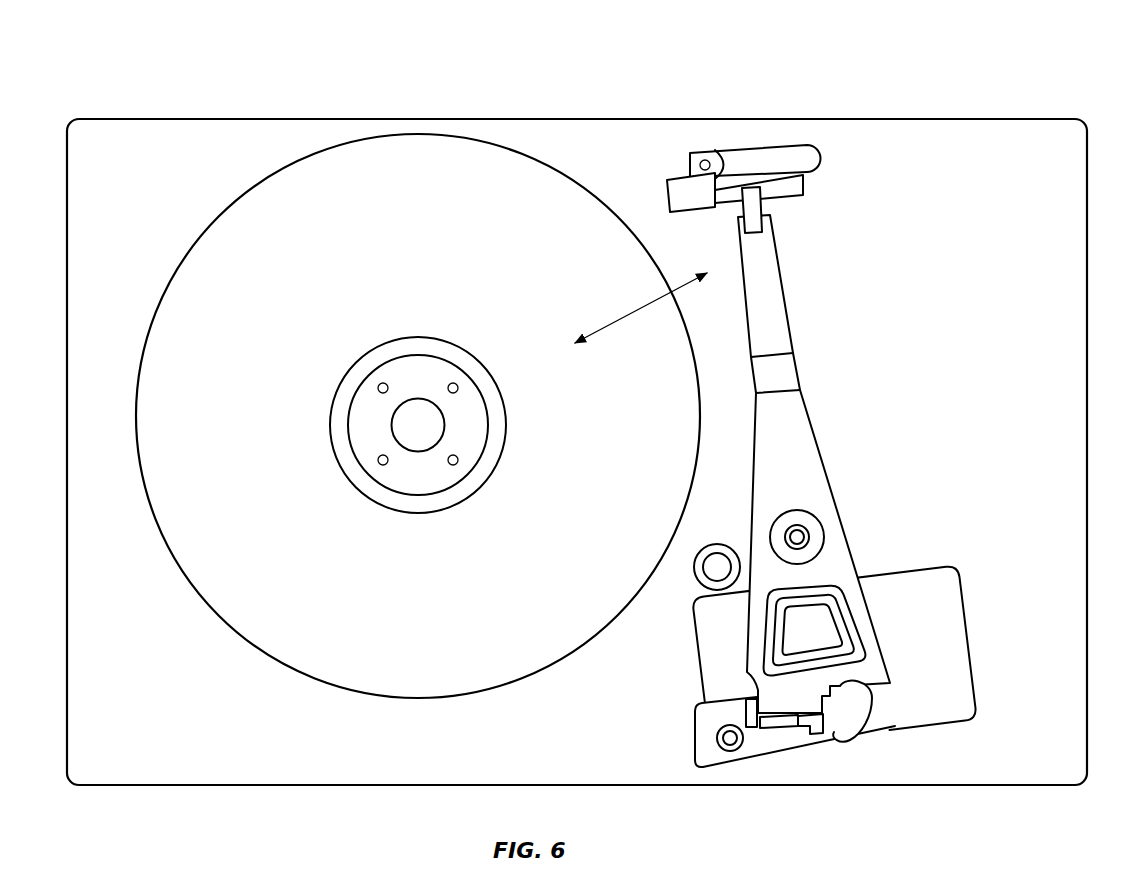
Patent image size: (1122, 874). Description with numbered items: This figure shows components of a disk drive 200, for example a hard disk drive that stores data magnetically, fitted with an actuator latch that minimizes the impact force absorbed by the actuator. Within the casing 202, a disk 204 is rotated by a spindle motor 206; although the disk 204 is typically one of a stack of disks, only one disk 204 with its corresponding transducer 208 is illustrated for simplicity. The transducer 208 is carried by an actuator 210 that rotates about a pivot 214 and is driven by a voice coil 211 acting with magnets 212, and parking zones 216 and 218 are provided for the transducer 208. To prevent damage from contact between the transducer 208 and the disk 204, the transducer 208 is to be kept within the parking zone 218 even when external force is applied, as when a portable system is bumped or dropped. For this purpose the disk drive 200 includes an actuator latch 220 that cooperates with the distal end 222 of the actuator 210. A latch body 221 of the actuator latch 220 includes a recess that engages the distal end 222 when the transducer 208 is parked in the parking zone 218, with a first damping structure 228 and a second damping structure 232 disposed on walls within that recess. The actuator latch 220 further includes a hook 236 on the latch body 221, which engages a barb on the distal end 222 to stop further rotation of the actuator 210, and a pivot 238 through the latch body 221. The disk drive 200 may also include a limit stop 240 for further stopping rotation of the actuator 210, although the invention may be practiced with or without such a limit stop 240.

The disk drive 200 is at (243, 58).
The casing 202 is at (562, 117).
The disk 204 is at (205, 232).
The spindle motor 206 is at (417, 372).
The transducer 208 is at (737, 211).
The actuator 210 is at (796, 342).
The voice coil 211 is at (863, 628).
The magnets 212 is at (931, 560).
The pivot 214 is at (797, 508).
The parking zone 216 is at (494, 422).
The parking zone 218 is at (790, 198).
The actuator latch 220 is at (693, 712).
The latch body 221 is at (758, 745).
The distal end 222 is at (815, 725).
The first damping structure 228 is at (746, 712).
The second damping structure 232 is at (780, 729).
The hook 236 is at (879, 711).
The pivot 238 is at (713, 738).
The limit stop 240 is at (714, 545).